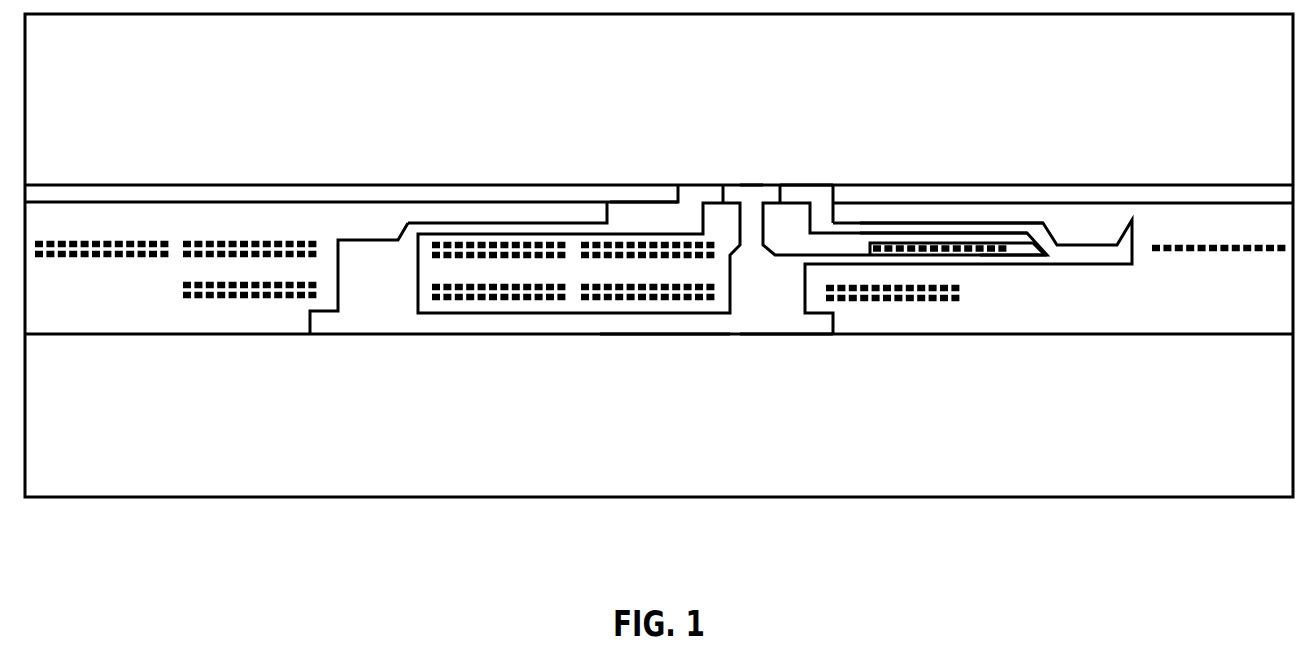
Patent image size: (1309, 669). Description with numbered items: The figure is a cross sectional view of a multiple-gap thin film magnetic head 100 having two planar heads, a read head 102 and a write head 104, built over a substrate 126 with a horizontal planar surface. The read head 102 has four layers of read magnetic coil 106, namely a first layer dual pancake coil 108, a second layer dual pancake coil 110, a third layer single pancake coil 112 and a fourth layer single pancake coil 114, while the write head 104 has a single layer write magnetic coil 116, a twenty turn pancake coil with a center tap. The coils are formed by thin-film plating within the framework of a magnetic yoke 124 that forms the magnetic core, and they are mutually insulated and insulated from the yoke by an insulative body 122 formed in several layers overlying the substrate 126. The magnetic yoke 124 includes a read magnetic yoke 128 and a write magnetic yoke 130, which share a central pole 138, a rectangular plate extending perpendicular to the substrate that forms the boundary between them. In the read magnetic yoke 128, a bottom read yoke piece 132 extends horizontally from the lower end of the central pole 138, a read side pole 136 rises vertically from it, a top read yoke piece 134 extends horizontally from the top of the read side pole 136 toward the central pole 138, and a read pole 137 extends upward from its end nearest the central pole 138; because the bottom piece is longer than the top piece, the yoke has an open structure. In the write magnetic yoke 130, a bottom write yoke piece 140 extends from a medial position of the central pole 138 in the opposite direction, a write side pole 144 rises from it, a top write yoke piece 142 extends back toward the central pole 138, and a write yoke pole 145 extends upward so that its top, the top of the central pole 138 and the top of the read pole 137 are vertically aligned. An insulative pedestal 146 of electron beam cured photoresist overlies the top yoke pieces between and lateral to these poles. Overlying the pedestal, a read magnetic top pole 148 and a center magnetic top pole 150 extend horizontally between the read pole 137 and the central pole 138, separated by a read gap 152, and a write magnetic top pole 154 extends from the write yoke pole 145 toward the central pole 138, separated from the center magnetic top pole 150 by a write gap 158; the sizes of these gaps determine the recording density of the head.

The multiple-gap thin film magnetic head 100 is at (190, 125).
The read head 102 is at (613, 200).
The write head 104 is at (912, 227).
The read magnetic coil 106 is at (220, 283).
The first layer dual pancake coil 108 is at (955, 300).
The second layer dual pancake coil 110 is at (958, 288).
The third layer single pancake coil 112 is at (122, 255).
The fourth layer single pancake coil 114 is at (122, 245).
The single layer write magnetic coil 116 is at (1000, 248).
The insulative body 122 is at (1087, 277).
The magnetic yoke 124 is at (763, 310).
The substrate 126 is at (575, 455).
The read magnetic yoke 128 is at (487, 325).
The write magnetic yoke 130 is at (1067, 240).
The bottom read yoke piece 132 is at (665, 323).
The top read yoke piece 134 is at (500, 220).
The read side pole 136 is at (367, 255).
The read pole 137 is at (645, 212).
The central pole 138 is at (788, 300).
The bottom write yoke piece 140 is at (873, 243).
The top write yoke piece 142 is at (900, 228).
The write side pole 144 is at (1117, 233).
The write yoke pole 145 is at (837, 205).
The insulative pedestal 146 is at (147, 187).
The read magnetic top pole 148 is at (690, 190).
The center magnetic top pole 150 is at (747, 192).
The read gap 152 is at (722, 190).
The write magnetic top pole 154 is at (793, 192).
The write gap 158 is at (780, 203).